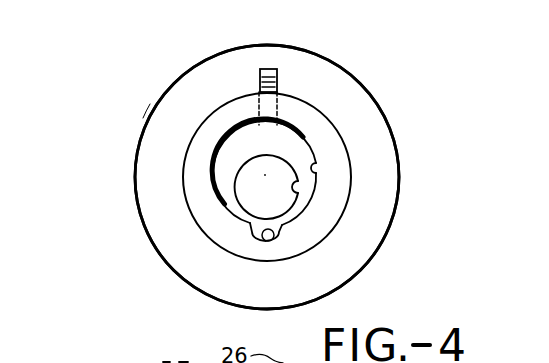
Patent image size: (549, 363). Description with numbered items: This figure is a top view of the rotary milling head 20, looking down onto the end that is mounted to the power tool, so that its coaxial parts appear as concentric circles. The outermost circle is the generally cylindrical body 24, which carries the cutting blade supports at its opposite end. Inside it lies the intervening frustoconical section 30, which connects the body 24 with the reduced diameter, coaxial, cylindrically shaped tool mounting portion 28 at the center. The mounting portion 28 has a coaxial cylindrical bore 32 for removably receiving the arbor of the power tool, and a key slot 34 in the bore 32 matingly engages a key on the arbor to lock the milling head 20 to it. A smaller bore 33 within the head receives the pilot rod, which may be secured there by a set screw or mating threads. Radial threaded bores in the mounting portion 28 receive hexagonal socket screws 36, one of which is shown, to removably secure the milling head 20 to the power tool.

The rotary milling head 20 is at (124, 207).
The generally cylindrical body 24 is at (134, 162).
The tool mounting portion 28 is at (185, 140).
The frustoconical section 30 is at (163, 113).
The coaxial cylindrical bore 32 is at (314, 160).
The bore 33 is at (295, 185).
The key slot 34 is at (279, 230).
The hexagonal socket screws 36 is at (273, 83).